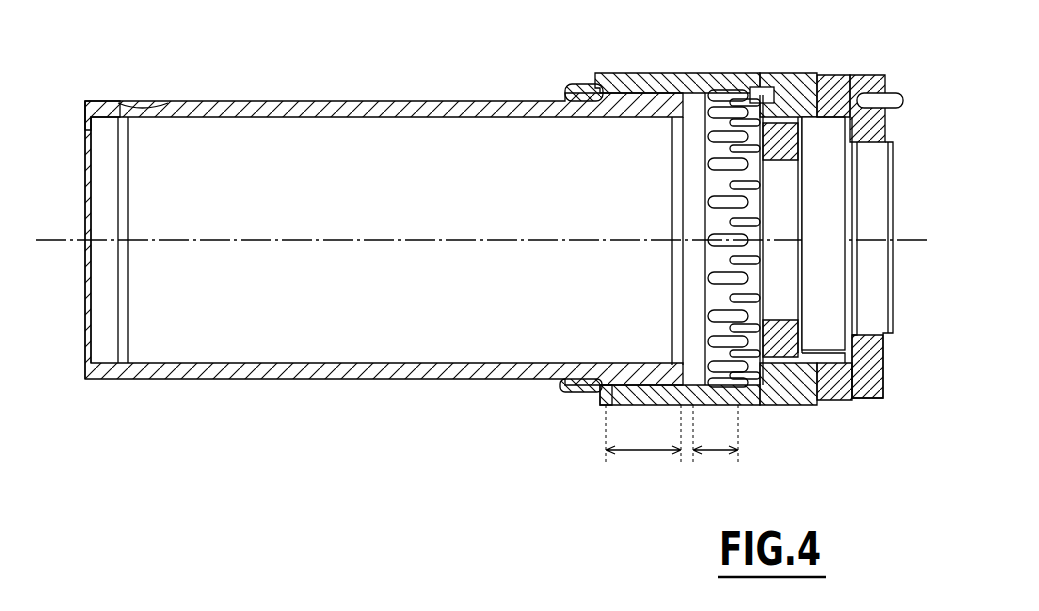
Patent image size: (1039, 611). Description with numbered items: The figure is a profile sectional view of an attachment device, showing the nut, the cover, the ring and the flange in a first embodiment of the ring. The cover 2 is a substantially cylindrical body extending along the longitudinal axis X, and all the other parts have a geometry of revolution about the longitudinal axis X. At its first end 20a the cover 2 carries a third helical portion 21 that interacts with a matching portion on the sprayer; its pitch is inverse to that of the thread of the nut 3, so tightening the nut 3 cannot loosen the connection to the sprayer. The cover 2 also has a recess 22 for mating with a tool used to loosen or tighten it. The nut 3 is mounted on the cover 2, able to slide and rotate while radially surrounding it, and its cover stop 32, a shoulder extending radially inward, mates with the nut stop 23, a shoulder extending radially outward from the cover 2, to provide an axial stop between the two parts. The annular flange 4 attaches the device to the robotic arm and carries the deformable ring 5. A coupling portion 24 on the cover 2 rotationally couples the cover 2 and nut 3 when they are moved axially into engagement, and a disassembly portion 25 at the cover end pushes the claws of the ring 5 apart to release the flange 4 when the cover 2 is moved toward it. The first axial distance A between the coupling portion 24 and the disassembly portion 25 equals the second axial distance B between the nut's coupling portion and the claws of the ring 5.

The cover 2 is at (288, 375).
The first end 20a is at (83, 107).
The third helical portion 21 is at (96, 375).
The recess 22 is at (141, 371).
The nut stop 23 is at (594, 88).
The coupling portion 24 is at (674, 388).
The disassembly portion 25 is at (598, 408).
The nut 3 is at (742, 399).
The cover stop 32 is at (590, 398).
The annular flange 4 is at (838, 404).
The deformable ring 5 is at (713, 125).
The first axial distance A is at (643, 433).
The second axial distance B is at (715, 433).
The longitudinal axis X is at (483, 227).